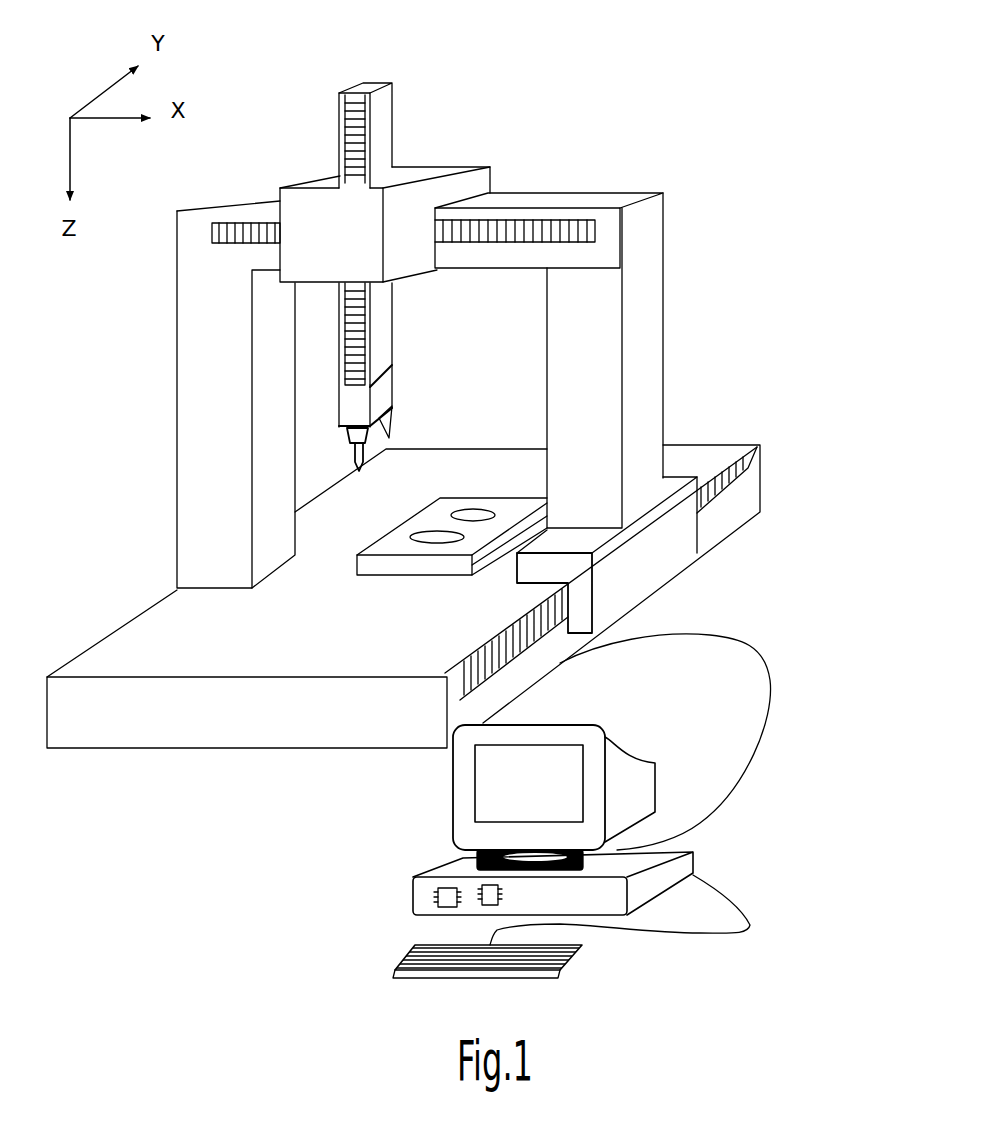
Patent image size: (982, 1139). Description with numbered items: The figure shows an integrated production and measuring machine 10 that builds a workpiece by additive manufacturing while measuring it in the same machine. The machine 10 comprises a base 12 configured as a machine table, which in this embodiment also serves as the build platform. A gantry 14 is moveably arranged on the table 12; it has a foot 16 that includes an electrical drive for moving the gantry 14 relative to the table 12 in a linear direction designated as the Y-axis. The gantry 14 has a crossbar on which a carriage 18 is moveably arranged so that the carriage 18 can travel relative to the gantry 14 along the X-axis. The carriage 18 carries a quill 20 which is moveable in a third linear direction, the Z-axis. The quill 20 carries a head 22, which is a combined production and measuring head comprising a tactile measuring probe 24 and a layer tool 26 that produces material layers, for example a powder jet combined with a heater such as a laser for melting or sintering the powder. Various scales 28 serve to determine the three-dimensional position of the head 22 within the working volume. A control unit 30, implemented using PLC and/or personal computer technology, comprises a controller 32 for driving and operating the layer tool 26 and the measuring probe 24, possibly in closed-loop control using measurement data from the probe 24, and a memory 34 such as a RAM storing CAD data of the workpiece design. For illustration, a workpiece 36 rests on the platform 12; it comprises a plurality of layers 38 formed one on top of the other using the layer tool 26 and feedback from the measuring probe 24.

The integrated production and measuring machine 10 is at (690, 170).
The base 12 is at (693, 455).
The gantry 14 is at (658, 333).
The foot 16 is at (673, 553).
The carriage 18 is at (437, 167).
The quill 20 is at (400, 88).
The head 22 is at (383, 392).
The tactile measuring probe 24 is at (368, 448).
The layer tool 26 is at (393, 437).
The scales 28 is at (545, 220).
The control unit 30 is at (412, 842).
The controller 32 is at (437, 905).
The memory 34 is at (492, 903).
The workpiece 36 is at (355, 575).
The layers 38 is at (433, 565).